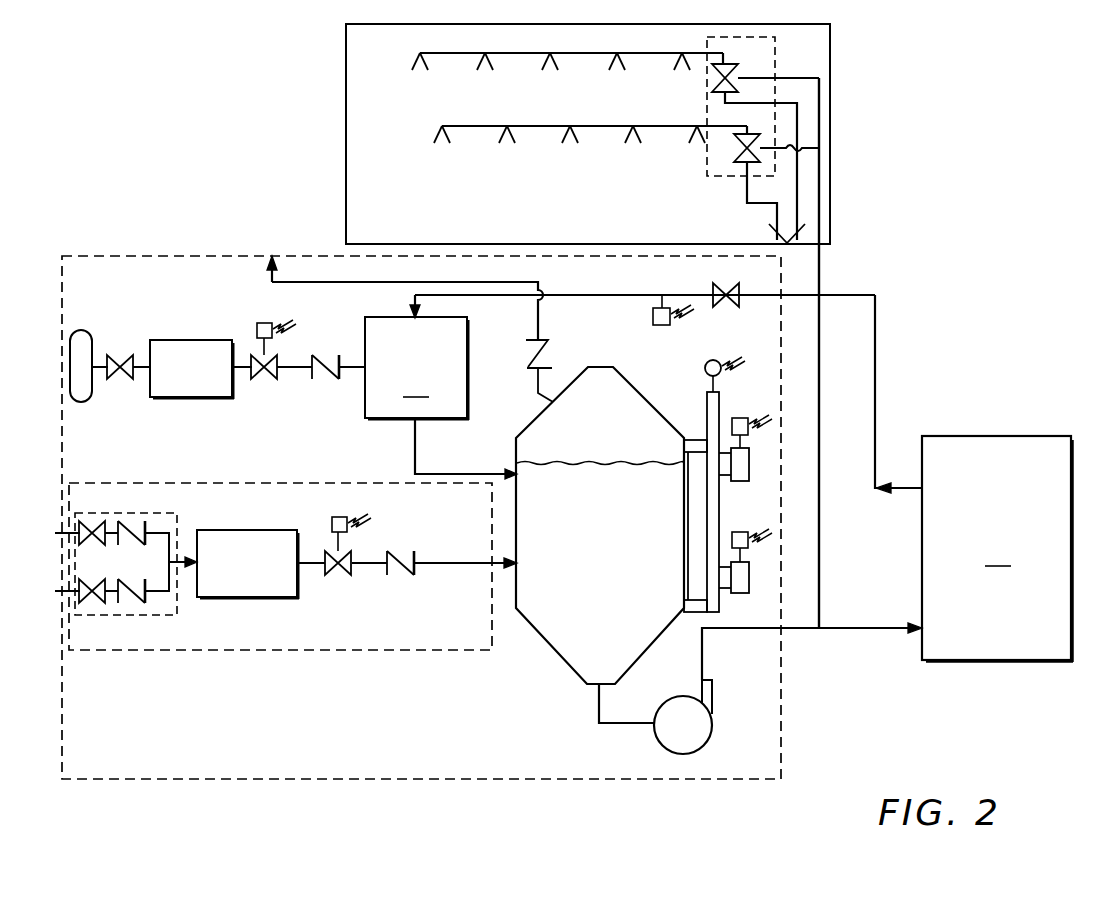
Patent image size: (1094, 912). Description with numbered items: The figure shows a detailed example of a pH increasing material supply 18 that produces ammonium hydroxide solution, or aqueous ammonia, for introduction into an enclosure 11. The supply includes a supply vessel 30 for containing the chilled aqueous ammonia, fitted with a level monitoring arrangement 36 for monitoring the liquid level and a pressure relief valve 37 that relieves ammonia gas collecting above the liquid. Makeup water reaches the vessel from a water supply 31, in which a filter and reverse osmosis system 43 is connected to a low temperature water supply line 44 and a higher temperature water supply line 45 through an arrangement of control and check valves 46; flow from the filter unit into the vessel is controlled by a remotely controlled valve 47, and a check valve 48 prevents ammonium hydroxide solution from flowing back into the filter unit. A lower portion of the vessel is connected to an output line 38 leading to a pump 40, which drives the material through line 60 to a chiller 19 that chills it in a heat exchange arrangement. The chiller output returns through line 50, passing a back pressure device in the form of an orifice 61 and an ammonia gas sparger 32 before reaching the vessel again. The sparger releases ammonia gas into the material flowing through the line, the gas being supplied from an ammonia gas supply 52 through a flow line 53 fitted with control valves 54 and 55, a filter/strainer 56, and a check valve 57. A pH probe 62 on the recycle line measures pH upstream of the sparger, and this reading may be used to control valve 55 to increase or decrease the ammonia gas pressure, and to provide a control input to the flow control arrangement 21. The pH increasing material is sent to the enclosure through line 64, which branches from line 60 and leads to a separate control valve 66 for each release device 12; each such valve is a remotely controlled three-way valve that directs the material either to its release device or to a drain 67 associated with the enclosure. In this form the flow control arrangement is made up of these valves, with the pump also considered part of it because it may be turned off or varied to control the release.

The enclosure 11 is at (368, 226).
The release device 12 is at (500, 86).
The flow control arrangement 21 is at (776, 62).
The control valve 66 is at (712, 80).
The drain 67 is at (772, 237).
The line 64 is at (821, 206).
The pH increasing material supply 18 is at (508, 781).
The pressure relief valve 37 is at (552, 353).
The orifice 61 is at (712, 290).
The pH probe 62 is at (661, 327).
The line 50 is at (876, 346).
The ammonia gas supply 52 is at (93, 336).
The control valve 54 is at (121, 381).
The filter/strainer 56 is at (178, 340).
The control valve 55 is at (266, 381).
The check valve 57 is at (330, 353).
The flow line 53 is at (356, 372).
The ammonia gas sparger 32 is at (417, 368).
The supply vessel 30 is at (516, 600).
The level monitoring arrangement 36 is at (720, 518).
The output line 38 is at (598, 709).
The pump 40 is at (656, 736).
The line 60 is at (846, 631).
The water supply 31 is at (270, 652).
The arrangement of control and check valves 46 is at (178, 526).
The higher temperature water supply line 45 is at (55, 532).
The low temperature water supply line 44 is at (55, 592).
The filter and reverse osmosis system 43 is at (256, 531).
The remotely controlled valve 47 is at (339, 577).
The check valve 48 is at (395, 577).
The chiller 19 is at (997, 549).